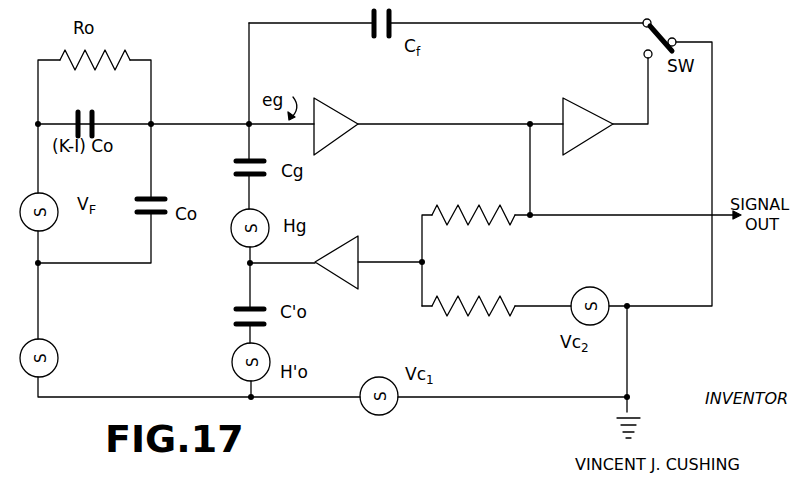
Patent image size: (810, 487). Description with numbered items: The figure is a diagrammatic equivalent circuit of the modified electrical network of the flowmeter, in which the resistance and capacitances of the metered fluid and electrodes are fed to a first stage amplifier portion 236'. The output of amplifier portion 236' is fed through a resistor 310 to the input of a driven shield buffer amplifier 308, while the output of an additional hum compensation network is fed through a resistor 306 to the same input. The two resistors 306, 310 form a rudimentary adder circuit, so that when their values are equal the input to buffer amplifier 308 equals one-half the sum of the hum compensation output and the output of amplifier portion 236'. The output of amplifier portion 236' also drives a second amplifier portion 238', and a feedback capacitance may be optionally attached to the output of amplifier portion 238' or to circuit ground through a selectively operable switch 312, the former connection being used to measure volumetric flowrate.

The amplifier portion 236' is at (356, 132).
The amplifier portion 238' is at (602, 132).
The driven shield buffer amplifier 308 is at (337, 284).
The resistor 310 is at (461, 203).
The resistor 306 is at (483, 297).
The selectively operable switch 312 is at (661, 27).